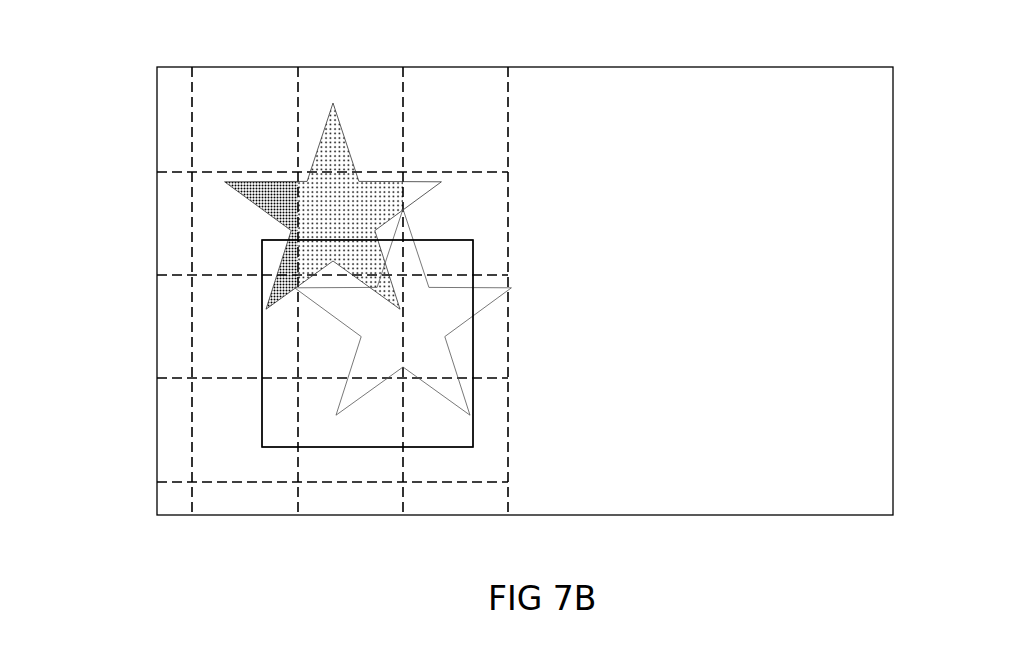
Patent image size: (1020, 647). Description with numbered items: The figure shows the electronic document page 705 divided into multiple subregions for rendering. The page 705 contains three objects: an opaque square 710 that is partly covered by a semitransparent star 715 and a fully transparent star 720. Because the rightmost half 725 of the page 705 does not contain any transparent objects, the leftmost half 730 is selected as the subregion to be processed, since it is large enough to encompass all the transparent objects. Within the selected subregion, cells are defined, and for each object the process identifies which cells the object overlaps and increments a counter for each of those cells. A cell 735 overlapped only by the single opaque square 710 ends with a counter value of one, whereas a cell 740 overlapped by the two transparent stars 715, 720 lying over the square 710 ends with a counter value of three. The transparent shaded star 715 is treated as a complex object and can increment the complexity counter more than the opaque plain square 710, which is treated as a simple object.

The electronic document page 705 is at (840, 67).
The opaque square 710 is at (260, 429).
The semitransparent star 715 is at (393, 175).
The fully transparent star 720 is at (512, 283).
The rightmost half 725 is at (878, 113).
The leftmost half 730 is at (263, 67).
The cell 735 is at (243, 465).
The cell 740 is at (315, 345).